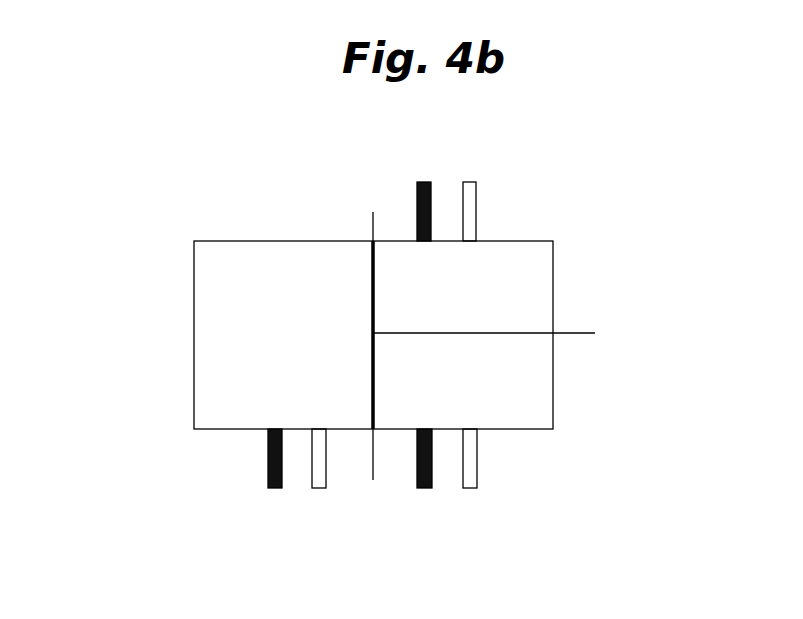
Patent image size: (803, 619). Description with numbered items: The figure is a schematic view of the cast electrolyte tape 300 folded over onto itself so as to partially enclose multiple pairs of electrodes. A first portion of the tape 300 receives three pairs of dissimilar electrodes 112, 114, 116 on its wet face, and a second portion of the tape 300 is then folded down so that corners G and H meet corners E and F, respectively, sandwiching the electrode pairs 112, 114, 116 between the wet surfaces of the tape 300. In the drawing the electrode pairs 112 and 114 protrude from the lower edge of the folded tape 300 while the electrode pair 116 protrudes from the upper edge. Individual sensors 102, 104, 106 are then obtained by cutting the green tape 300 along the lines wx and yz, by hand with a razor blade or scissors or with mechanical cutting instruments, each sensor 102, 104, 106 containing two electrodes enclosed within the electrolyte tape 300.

The individual sensor 102 is at (228, 344).
The individual sensor 104 is at (500, 285).
The individual sensor 106 is at (490, 382).
The pair of dissimilar electrodes 112 is at (323, 492).
The pair of dissimilar electrodes 114 is at (467, 492).
The pair of dissimilar electrodes 116 is at (476, 170).
The tape 300 is at (257, 298).